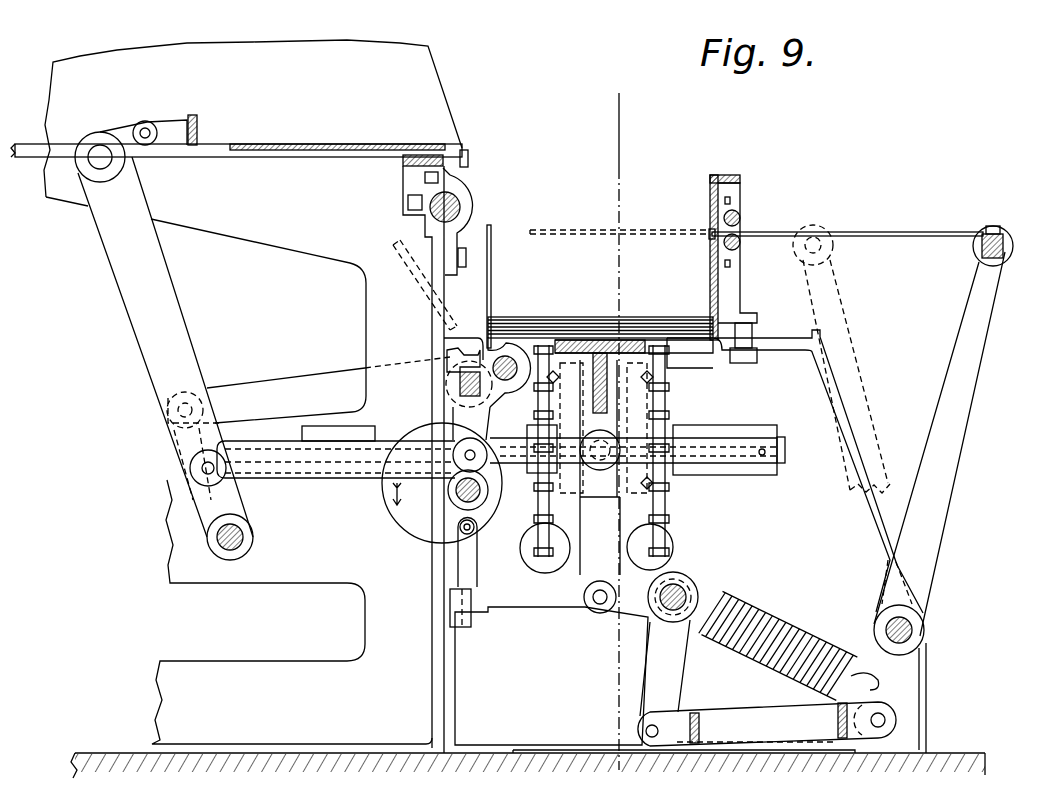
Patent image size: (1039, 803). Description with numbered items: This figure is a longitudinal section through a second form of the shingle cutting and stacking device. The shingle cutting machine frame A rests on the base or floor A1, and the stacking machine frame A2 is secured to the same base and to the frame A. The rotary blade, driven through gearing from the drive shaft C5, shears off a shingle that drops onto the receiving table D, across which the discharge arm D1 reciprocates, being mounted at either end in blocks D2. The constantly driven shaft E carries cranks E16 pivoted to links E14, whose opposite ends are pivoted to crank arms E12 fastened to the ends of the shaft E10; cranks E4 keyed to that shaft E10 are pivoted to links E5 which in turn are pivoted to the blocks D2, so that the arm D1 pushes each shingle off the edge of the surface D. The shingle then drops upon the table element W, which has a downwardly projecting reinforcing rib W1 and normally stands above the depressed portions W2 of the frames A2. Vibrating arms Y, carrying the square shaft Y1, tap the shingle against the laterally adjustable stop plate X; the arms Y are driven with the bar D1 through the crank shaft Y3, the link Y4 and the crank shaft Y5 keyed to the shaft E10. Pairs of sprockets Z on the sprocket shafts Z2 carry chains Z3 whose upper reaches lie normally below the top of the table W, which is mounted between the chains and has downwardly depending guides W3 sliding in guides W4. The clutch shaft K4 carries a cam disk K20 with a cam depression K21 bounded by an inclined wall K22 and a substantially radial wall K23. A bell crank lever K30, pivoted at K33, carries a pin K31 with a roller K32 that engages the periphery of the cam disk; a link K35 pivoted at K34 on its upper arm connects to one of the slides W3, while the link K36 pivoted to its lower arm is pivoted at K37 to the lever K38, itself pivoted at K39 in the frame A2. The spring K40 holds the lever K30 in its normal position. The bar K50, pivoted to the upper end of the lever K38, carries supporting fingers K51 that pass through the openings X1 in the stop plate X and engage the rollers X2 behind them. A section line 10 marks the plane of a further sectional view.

The shingle cutting machine frame A is at (287, 667).
The base or floor A1 is at (100, 753).
The stacking machine frame A2 is at (823, 400).
The drive shaft C5 is at (430, 207).
The receiving bars or table D is at (293, 146).
The discharge arm D1 is at (198, 115).
The blocks D2 is at (168, 122).
The shaft E is at (507, 355).
The cranks E4 is at (163, 283).
The links E5 is at (118, 130).
The shaft E10 is at (213, 539).
The crank arms E12 is at (180, 437).
The links E14 is at (292, 384).
The cranks E16 is at (448, 358).
The clutch shaft K4 is at (455, 491).
The cam disk K20 is at (388, 516).
The cam depression K21 is at (474, 524).
The inclined wall K22 is at (437, 534).
The radial wall K23 is at (477, 531).
The bell crank lever K30 is at (558, 604).
The pin K31 is at (450, 590).
The roller K32 is at (457, 545).
The pivot K33 is at (699, 588).
The pivot K34 is at (601, 604).
The link K35 is at (652, 571).
The link K36 is at (743, 716).
The pivot K37 is at (886, 720).
The lever K38 is at (948, 470).
The pivot K39 is at (914, 630).
The spring K40 is at (807, 623).
The bar K50 is at (979, 248).
The supporting fingers K51 is at (873, 230).
The table element W is at (585, 340).
The reinforcing rib W1 is at (670, 380).
The depressed portions W2 is at (678, 350).
The guides W3 is at (613, 394).
The guides W4 is at (579, 494).
The stop plate X is at (710, 195).
The slot X1 is at (713, 232).
The rollers X2 is at (741, 243).
The vibrating arms Y is at (491, 233).
The square shaft Y1 is at (458, 381).
The crank shaft Y3 is at (455, 426).
The link Y4 is at (278, 474).
The crank shaft Y5 is at (203, 498).
The sprockets Z is at (593, 400).
The sprocket shafts Z2 is at (785, 455).
The chains Z3 is at (550, 345).
The section line 10 is at (628, 105).